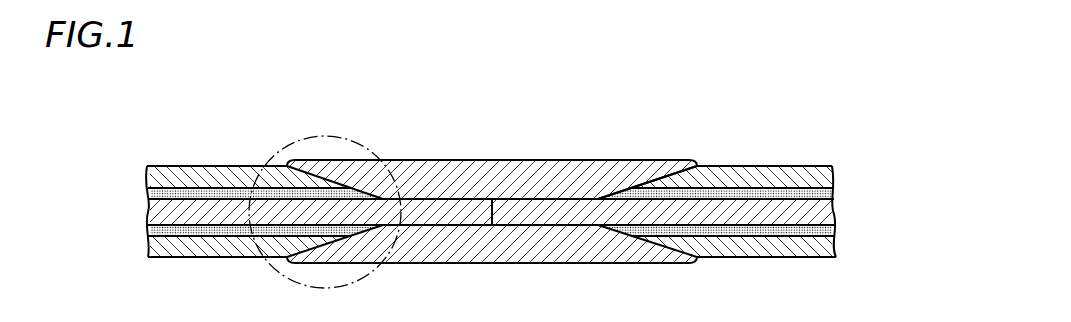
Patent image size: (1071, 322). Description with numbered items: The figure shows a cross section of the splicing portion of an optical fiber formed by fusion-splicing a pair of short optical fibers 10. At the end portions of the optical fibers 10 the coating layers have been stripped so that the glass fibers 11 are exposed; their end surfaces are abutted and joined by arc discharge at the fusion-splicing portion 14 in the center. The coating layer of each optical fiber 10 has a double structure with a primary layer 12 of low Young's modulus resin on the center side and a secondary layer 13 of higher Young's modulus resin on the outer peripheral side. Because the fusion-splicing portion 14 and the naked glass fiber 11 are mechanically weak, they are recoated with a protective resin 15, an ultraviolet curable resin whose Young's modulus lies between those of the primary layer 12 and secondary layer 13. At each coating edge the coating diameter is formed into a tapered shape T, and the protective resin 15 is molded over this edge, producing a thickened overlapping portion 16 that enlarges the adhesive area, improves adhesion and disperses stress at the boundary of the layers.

The optical fiber 10 is at (80, 158).
The glass fiber 11 is at (158, 212).
The primary layer 12 is at (148, 190).
The secondary layer 13 is at (146, 174).
The fusion-splicing portion 14 is at (492, 218).
The protective resin 15 is at (500, 172).
The overlapping portion 16 is at (325, 136).
The tapered shape T is at (623, 190).